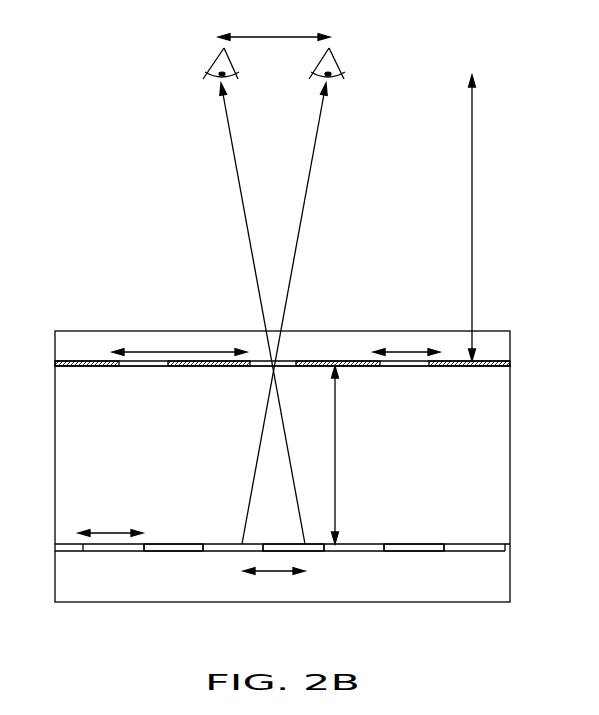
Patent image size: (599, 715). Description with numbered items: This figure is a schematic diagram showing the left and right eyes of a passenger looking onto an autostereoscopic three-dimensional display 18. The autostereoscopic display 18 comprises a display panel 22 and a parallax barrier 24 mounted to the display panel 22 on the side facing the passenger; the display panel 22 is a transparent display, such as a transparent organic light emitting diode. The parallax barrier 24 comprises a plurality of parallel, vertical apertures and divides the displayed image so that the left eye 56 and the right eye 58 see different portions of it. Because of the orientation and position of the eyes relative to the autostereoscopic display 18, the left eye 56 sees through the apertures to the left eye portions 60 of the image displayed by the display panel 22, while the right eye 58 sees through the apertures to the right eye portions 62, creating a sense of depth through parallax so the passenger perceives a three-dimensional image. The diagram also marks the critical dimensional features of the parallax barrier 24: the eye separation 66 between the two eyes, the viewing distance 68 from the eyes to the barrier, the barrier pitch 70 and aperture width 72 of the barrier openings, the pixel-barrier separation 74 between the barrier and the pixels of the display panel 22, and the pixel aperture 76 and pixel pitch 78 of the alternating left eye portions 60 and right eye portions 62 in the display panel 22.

The autostereoscopic three-dimensional display 18 is at (304, 499).
The display panel 22 is at (313, 484).
The parallax barrier 24 is at (313, 348).
The left eye 56 is at (334, 63).
The right eye 58 is at (218, 63).
The left eye portions 60 is at (112, 548).
The right eye portions 62 is at (175, 548).
The eye separation 66 is at (273, 36).
The viewing distance 68 is at (472, 218).
The barrier pitch 70 is at (180, 352).
The aperture width 72 is at (407, 352).
The pixel-barrier separation 74 is at (336, 455).
The pixel aperture 76 is at (112, 533).
The pixel pitch 78 is at (274, 572).